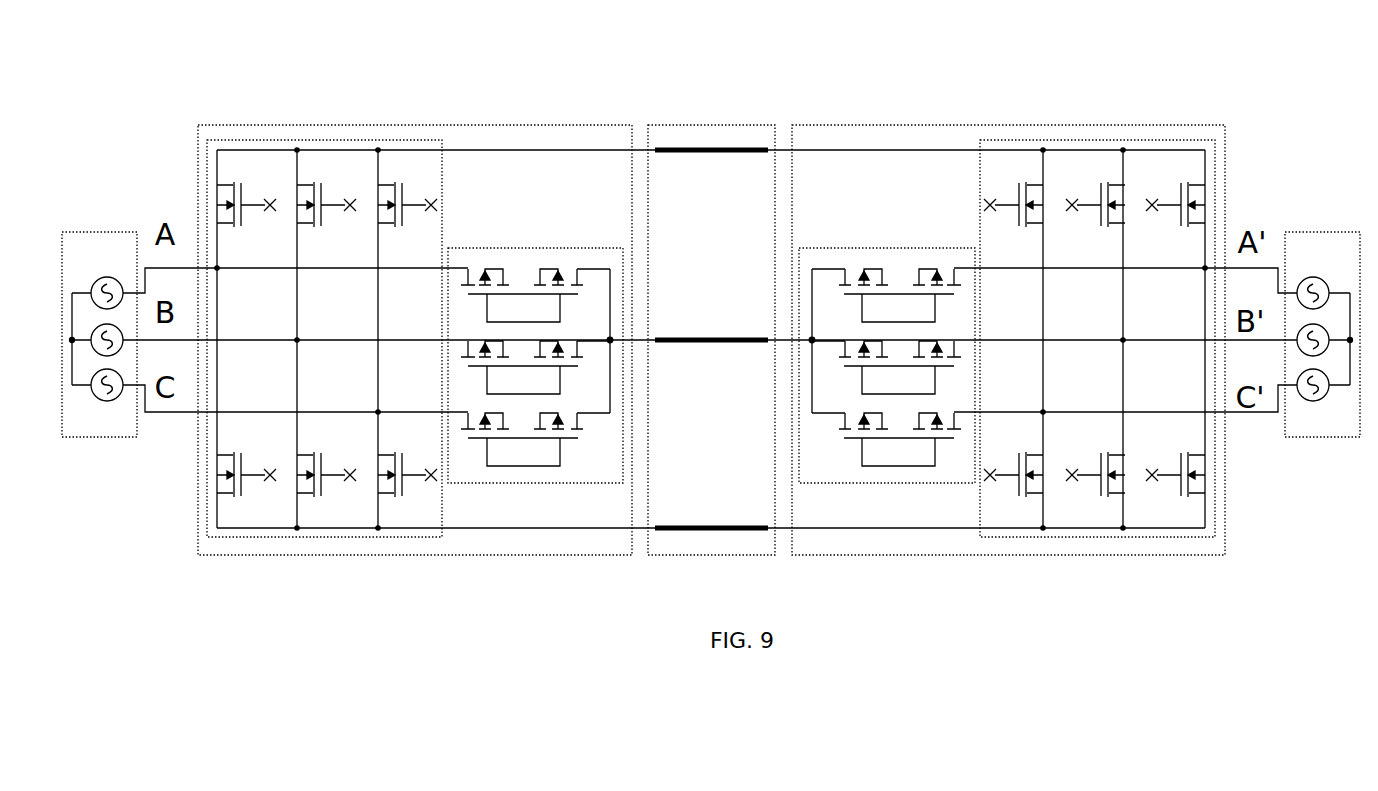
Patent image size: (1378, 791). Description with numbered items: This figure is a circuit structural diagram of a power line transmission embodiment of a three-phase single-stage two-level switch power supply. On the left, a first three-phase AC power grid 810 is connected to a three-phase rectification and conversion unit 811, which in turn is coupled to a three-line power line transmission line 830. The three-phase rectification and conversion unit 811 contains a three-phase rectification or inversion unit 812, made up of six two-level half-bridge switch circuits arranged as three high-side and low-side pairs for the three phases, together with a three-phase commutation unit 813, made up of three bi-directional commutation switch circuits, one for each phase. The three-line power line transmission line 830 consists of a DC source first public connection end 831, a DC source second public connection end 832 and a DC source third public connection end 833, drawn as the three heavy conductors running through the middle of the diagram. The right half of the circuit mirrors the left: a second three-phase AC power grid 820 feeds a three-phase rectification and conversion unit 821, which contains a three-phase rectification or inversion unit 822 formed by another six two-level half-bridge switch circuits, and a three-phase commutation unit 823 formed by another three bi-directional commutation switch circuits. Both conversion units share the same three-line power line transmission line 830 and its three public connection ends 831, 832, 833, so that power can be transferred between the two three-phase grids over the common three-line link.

The first three-phase AC power grid 810 is at (73, 232).
The three-phase rectification and conversion unit 811 is at (273, 124).
The three-phase rectification or inversion unit 812 is at (340, 139).
The three-phase commutation unit 813 is at (543, 247).
The second three-phase AC power grid 820 is at (1290, 231).
The three-phase rectification and conversion unit 821 is at (982, 124).
The three-phase rectification or inversion unit 822 is at (1103, 139).
The three-phase commutation unit 823 is at (827, 247).
The three-line power line transmission line 830 is at (748, 123).
The DC source first public connection end 831 is at (695, 147).
The DC source second public connection end 832 is at (733, 524).
The DC source third public connection end 833 is at (747, 336).